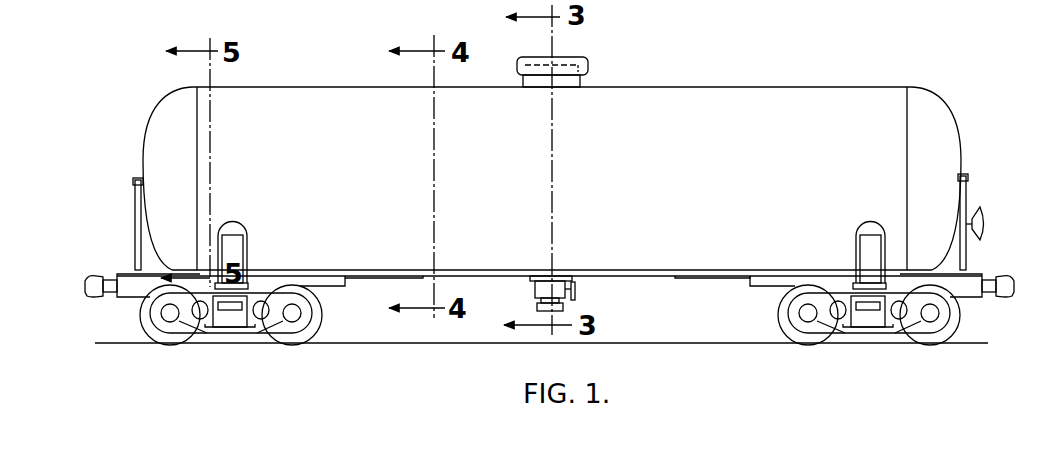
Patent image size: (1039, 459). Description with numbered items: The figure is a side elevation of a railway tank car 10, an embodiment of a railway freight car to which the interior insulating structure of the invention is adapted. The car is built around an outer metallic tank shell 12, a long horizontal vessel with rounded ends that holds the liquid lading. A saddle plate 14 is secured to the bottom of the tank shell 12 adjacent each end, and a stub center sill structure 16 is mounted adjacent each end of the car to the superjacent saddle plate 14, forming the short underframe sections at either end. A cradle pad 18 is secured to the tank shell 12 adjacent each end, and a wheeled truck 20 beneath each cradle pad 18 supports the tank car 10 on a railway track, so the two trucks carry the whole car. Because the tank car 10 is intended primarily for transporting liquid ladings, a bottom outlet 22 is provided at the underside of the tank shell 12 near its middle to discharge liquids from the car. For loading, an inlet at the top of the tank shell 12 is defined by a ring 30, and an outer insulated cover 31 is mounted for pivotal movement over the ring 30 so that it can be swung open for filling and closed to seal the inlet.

The railway tank car 10 is at (822, 79).
The outer metallic tank shell 12 is at (691, 178).
The saddle plate 14 is at (372, 278).
The stub center sill structure 16 is at (325, 288).
The cradle pad 18 is at (239, 228).
The wheeled truck 20 is at (147, 314).
The bottom outlet 22 is at (532, 291).
The ring 30 is at (584, 80).
The outer insulated cover 31 is at (585, 60).